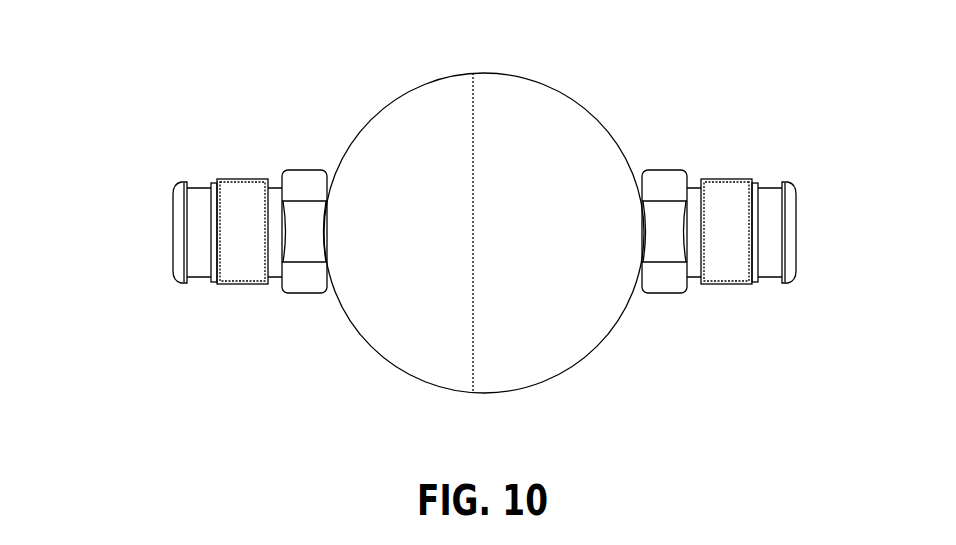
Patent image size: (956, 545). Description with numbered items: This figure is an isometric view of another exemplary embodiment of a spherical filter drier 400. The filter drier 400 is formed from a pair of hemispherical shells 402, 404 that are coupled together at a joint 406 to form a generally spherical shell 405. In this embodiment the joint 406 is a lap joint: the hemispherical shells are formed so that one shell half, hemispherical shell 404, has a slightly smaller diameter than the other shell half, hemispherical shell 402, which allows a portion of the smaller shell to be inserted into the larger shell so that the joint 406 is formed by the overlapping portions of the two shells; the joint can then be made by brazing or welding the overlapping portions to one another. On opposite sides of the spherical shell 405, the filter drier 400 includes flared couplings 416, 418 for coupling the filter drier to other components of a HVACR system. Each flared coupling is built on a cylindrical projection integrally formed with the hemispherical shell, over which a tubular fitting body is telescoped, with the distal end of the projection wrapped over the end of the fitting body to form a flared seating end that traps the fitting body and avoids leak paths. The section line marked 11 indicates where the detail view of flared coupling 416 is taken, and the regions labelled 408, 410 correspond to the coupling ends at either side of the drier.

The spherical filter drier 400 is at (484, 224).
The hemispherical shell 402 is at (595, 168).
The hemispherical shell 404 is at (348, 172).
The spherical shell 405 is at (473, 224).
The joint 406 is at (470, 72).
The second end fitting 408 is at (761, 218).
The first end fitting 410 is at (207, 218).
The flared coupling 416 is at (722, 195).
The flared coupling 418 is at (245, 195).
The section line 11- 11 is at (160, 223).